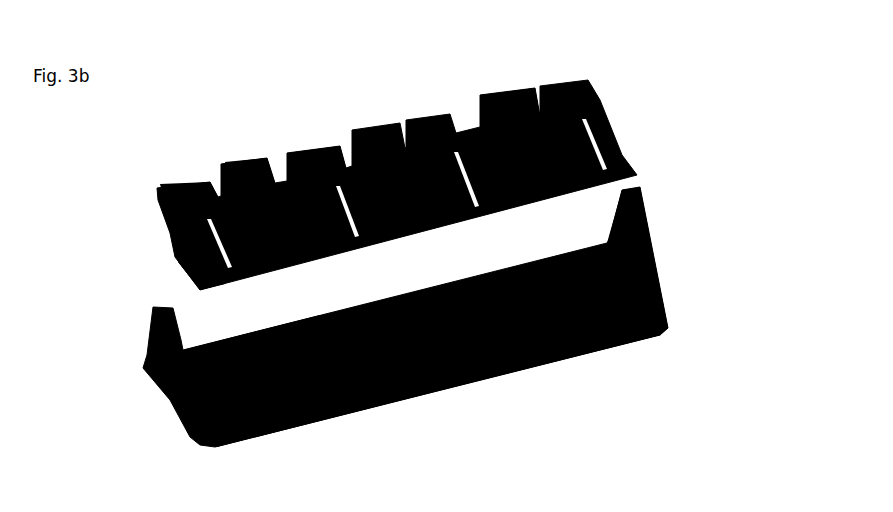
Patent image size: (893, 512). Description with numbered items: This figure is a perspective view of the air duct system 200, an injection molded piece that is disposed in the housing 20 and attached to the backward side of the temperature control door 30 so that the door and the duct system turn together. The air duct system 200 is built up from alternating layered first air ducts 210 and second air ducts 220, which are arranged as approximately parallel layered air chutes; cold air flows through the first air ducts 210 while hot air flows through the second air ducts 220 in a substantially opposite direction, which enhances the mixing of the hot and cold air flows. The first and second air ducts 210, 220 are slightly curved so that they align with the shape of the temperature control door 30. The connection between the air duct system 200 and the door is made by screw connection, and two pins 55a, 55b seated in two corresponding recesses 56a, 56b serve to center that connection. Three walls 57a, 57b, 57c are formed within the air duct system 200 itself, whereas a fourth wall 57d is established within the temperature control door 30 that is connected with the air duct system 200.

The housing 20 is at (187, 430).
The temperature control door 30 is at (635, 337).
The pin 55a is at (340, 407).
The pin 55b is at (517, 367).
The recess 56a is at (310, 148).
The recess 56b is at (478, 127).
The wall 57a is at (200, 288).
The wall 57b is at (177, 185).
The wall 57c is at (237, 157).
The fourth wall 57d is at (260, 333).
The air duct system 200 is at (168, 237).
The first air duct 210 is at (182, 180).
The second air duct 220 is at (258, 163).